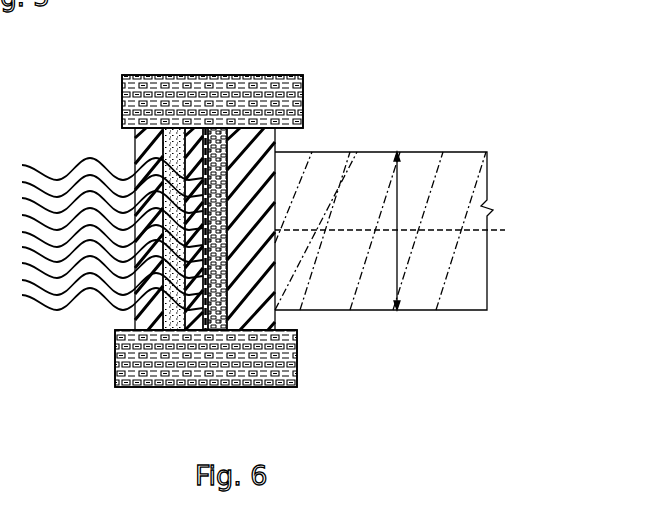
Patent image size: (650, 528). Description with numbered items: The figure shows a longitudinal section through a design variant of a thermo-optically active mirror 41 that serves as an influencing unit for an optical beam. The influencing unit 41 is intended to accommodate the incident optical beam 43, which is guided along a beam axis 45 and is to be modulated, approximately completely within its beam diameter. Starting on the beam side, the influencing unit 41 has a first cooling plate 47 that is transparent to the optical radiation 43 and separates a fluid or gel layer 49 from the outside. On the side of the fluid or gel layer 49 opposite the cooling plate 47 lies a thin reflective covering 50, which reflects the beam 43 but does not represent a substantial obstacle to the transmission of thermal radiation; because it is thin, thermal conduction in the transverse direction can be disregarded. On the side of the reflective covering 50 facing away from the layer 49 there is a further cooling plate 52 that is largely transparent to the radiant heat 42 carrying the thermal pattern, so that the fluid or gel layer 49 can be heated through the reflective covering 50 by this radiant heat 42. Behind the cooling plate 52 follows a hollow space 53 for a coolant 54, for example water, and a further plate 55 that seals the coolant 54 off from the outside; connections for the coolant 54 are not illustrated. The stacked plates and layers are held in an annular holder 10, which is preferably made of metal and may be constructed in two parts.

The annular holder 10 is at (302, 100).
The thermo-optically active mirror 41 is at (331, 48).
The radiant heat 42 is at (62, 275).
The optical beam 43 is at (483, 303).
The beam axis 45 is at (455, 232).
The first cooling plate 47 is at (265, 144).
The fluid or gel layer 49 is at (228, 117).
The reflective covering 50 is at (205, 347).
The further cooling plate 52 is at (198, 117).
The hollow space 53 is at (178, 115).
The coolant 54 is at (180, 347).
The further plate 55 is at (155, 132).